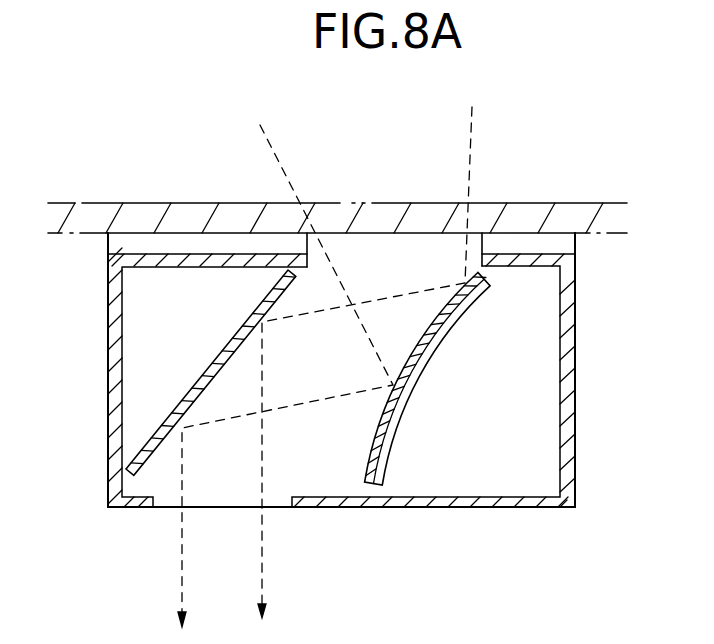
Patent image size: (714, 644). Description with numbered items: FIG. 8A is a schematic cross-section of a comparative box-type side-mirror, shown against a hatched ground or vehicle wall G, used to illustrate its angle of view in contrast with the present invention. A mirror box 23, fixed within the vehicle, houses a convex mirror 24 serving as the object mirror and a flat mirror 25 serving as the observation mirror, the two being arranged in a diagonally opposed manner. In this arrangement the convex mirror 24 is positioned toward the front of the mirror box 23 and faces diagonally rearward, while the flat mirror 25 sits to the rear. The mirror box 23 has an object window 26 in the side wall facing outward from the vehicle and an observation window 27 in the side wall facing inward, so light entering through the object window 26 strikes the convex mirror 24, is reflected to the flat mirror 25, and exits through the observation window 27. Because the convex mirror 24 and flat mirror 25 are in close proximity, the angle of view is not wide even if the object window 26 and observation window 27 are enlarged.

The ground surface G is at (183, 205).
The mirror box 23 is at (487, 508).
The convex mirror 24 is at (447, 307).
The flat mirror 25 is at (160, 445).
The object window 26 is at (466, 262).
The observation window 27 is at (158, 508).